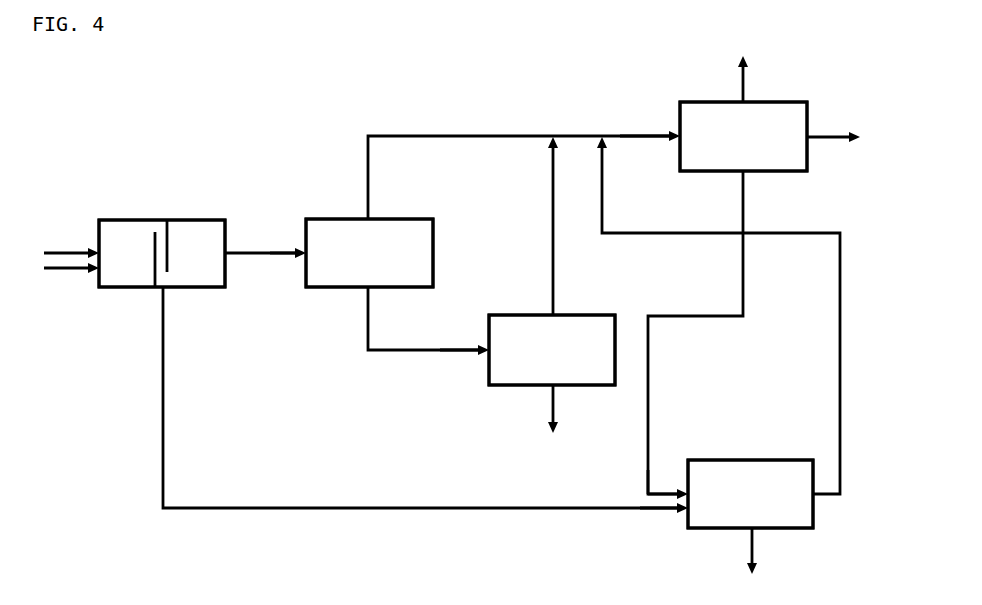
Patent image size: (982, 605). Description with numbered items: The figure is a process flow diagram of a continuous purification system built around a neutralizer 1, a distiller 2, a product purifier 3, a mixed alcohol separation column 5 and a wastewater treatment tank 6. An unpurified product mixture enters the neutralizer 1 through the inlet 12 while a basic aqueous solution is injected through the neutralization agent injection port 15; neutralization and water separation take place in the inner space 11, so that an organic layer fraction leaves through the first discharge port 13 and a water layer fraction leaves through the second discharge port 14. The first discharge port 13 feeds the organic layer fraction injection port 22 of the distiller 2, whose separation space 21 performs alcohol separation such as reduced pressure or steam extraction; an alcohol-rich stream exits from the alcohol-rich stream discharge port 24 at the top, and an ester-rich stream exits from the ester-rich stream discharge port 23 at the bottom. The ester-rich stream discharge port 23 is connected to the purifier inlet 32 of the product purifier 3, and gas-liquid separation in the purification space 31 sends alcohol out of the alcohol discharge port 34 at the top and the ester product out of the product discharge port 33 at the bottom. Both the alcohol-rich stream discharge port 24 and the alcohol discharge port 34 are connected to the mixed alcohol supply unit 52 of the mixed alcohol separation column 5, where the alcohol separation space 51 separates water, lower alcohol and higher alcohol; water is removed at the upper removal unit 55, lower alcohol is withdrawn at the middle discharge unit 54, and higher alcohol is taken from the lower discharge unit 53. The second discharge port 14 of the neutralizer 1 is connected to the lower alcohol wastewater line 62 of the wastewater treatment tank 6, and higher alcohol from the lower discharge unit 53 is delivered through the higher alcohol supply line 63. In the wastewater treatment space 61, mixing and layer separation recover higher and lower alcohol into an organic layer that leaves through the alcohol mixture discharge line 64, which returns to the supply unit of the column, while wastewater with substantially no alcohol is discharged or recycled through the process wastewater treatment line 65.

The neutralizer 1 is at (163, 220).
The distiller 2 is at (435, 253).
The product purifier 3 is at (616, 350).
The mixed alcohol separation column 5 is at (797, 102).
The wastewater treatment tank 6 is at (755, 460).
The inner space 11 is at (162, 253).
The inlet 12 is at (71, 245).
The first discharge port 13 is at (265, 245).
The second discharge port 14 is at (425, 400).
The neutralization agent injection port 15 is at (71, 278).
The separation space 21 is at (369, 253).
The organic layer fraction injection port 22 is at (286, 264).
The ester-rich stream discharge port 23 is at (428, 321).
The alcohol-rich stream discharge port 24 is at (524, 175).
The purification space 31 is at (552, 350).
The purifier inlet 32 is at (460, 360).
The product discharge port 33 is at (562, 409).
The alcohol discharge port 34 is at (562, 226).
The alcohol separation space 51 is at (743, 136).
The mixed alcohol supply unit 52 is at (645, 124).
The lower discharge unit 53 is at (708, 335).
The middle discharge unit 54 is at (833, 126).
The upper removal unit 55 is at (756, 79).
The wastewater treatment space 61 is at (750, 494).
The lower alcohol wastewater line 62 is at (659, 519).
The higher alcohol supply line 63 is at (663, 482).
The alcohol mixture discharge line 64 is at (730, 315).
The process wastewater treatment line 65 is at (762, 551).